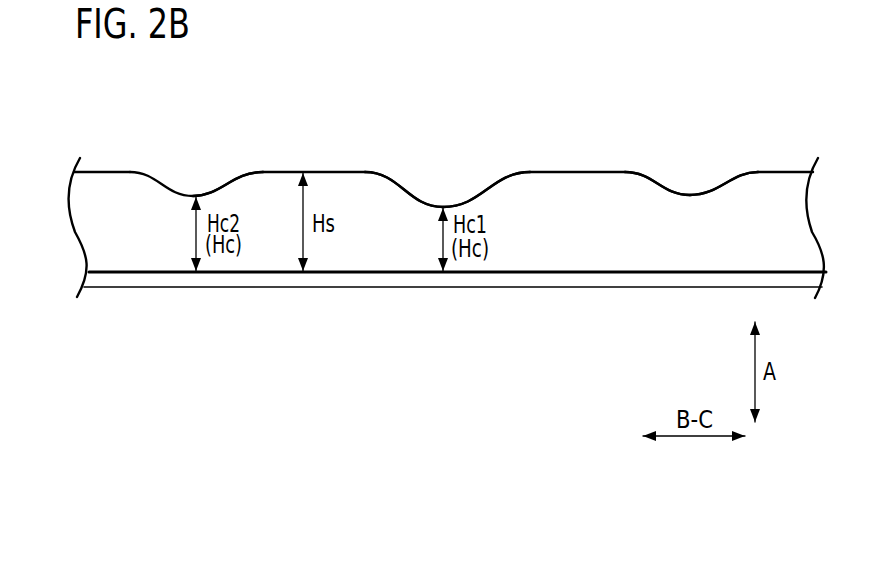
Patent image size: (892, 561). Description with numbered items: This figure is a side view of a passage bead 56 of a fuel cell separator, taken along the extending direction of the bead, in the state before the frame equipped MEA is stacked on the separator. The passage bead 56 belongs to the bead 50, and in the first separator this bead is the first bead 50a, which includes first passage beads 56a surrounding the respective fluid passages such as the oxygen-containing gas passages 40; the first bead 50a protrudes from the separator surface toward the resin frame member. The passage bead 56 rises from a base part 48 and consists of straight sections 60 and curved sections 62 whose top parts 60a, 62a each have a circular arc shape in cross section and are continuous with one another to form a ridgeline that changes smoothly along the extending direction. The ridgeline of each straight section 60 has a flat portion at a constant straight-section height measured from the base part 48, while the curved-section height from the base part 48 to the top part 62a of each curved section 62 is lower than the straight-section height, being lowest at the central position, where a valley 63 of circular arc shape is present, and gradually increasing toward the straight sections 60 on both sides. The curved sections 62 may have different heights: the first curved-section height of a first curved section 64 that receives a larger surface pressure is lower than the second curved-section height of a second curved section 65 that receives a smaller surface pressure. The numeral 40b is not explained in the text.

The oxygen-containing gas passage 40 is at (457, 316).
The upper surface of cooling plate 40b is at (535, 275).
The base part 48 is at (165, 276).
The bead 50 is at (433, 181).
The first bead 50a is at (118, 163).
The passage bead 56 is at (76, 201).
The first passage bead 56a is at (110, 170).
The straight section 60 is at (538, 137).
The top part of straight section 60a is at (547, 142).
The curved section 62 is at (444, 155).
The top part of curved section 62a is at (692, 195).
The valley 63 is at (398, 187).
The first curved section 64 is at (472, 182).
The second curved section 65 is at (223, 170).